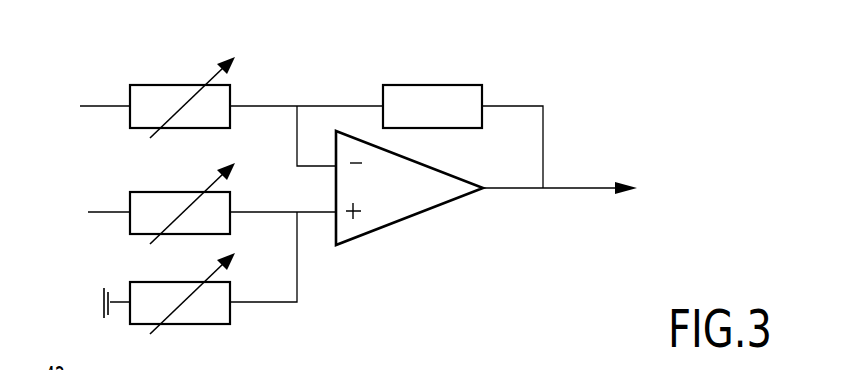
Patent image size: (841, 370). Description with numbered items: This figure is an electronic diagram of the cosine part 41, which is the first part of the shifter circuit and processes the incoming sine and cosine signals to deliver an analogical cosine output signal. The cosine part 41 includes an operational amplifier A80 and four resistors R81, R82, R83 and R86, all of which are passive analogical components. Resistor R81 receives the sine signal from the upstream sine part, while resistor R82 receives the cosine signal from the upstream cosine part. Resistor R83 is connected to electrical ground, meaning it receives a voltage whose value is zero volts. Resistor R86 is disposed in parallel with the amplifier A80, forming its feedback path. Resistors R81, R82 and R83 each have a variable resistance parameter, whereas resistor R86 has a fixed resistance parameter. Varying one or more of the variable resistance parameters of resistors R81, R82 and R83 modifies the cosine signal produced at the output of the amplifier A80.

The cosine part 41 is at (137, 53).
The resistor R81 is at (182, 97).
The resistor R82 is at (182, 203).
The resistor R83 is at (182, 293).
The resistor R86 is at (432, 106).
The operational amplifier A80 is at (409, 188).